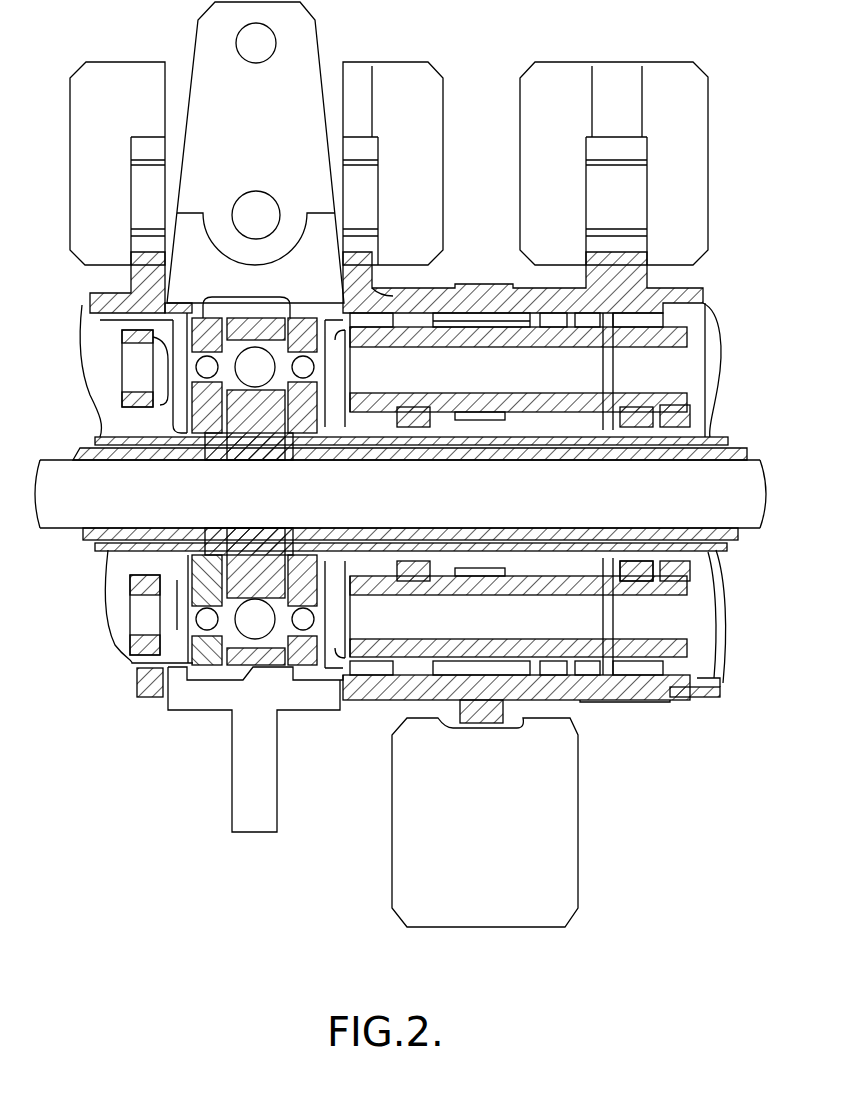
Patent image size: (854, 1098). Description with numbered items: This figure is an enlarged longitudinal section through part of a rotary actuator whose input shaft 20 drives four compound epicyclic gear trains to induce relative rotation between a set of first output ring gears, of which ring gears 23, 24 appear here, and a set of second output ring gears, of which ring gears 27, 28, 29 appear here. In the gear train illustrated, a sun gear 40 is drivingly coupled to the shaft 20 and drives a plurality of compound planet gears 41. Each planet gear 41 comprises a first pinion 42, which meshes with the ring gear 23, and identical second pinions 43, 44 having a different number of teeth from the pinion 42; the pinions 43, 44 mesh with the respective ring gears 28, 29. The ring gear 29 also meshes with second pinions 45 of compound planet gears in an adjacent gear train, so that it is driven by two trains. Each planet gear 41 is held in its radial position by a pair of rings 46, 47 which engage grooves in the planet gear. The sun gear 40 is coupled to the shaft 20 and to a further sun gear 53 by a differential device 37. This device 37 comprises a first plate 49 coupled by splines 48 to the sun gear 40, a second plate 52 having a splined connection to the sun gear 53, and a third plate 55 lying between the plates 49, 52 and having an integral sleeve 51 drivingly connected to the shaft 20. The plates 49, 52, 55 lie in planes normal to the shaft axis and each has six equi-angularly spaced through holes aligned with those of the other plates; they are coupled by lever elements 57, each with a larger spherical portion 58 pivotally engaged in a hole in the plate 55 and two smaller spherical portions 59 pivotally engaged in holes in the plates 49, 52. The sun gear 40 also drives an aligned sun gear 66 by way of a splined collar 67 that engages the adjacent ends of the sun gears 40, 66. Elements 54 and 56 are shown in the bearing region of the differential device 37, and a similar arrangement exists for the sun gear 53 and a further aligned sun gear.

The input shaft 20 is at (738, 483).
The first output ring gear 23 is at (500, 298).
The first output ring gear 24 is at (705, 630).
The second output ring gear 27 is at (153, 685).
The second output ring gear 28 is at (374, 288).
The second output ring gear 29 is at (633, 695).
The differential device 37 is at (231, 676).
The sun gear 40 is at (487, 420).
The compound planet gear 41 is at (120, 358).
The first pinion 42 is at (455, 320).
The second pinion 43 is at (373, 325).
The second pinion 44 is at (590, 325).
The second pinion 45 is at (637, 417).
The ring 46 is at (423, 423).
The ring 47 is at (547, 420).
The splines 48 is at (345, 437).
The first plate 49 is at (305, 563).
The sleeve 51 is at (85, 537).
The second plate 52 is at (212, 578).
The sun gear 53 is at (98, 438).
The bearing ring 54 is at (207, 648).
The third plate 55 is at (262, 550).
The bearing ring 56 is at (300, 660).
The lever element 57 is at (277, 340).
The larger spherical portion 58 is at (252, 363).
The balls 59 is at (207, 355).
The sun gear 66 is at (722, 546).
The splined collar 67 is at (630, 558).